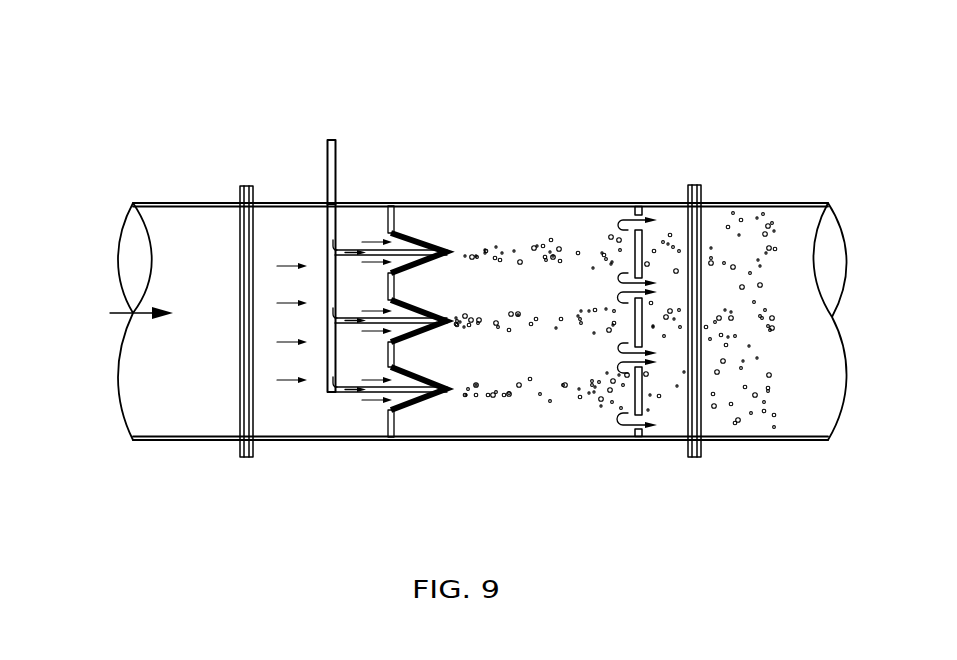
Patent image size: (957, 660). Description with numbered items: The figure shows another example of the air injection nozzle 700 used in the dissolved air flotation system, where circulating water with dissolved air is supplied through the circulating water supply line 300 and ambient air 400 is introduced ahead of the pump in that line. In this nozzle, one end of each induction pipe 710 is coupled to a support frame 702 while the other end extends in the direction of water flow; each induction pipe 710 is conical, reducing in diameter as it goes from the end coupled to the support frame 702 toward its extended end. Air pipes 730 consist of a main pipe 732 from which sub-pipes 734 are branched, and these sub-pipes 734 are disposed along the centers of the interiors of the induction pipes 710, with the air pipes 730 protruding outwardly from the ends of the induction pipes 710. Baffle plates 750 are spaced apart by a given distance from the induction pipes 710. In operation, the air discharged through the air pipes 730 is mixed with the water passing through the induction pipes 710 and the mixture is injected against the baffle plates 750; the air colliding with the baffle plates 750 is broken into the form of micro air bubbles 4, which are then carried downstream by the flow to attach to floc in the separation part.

The micro air bubbles 4 is at (744, 287).
The circulating water supply line 300 is at (176, 323).
The ambient air 400 is at (332, 122).
The air injection nozzle 700 is at (277, 203).
The support frame 702 is at (397, 423).
The induction pipe 710 is at (408, 337).
The air pipe 730 is at (473, 223).
The main pipe 732 is at (333, 157).
The sub-pipe 734 is at (448, 251).
The baffle plate 750 is at (641, 390).